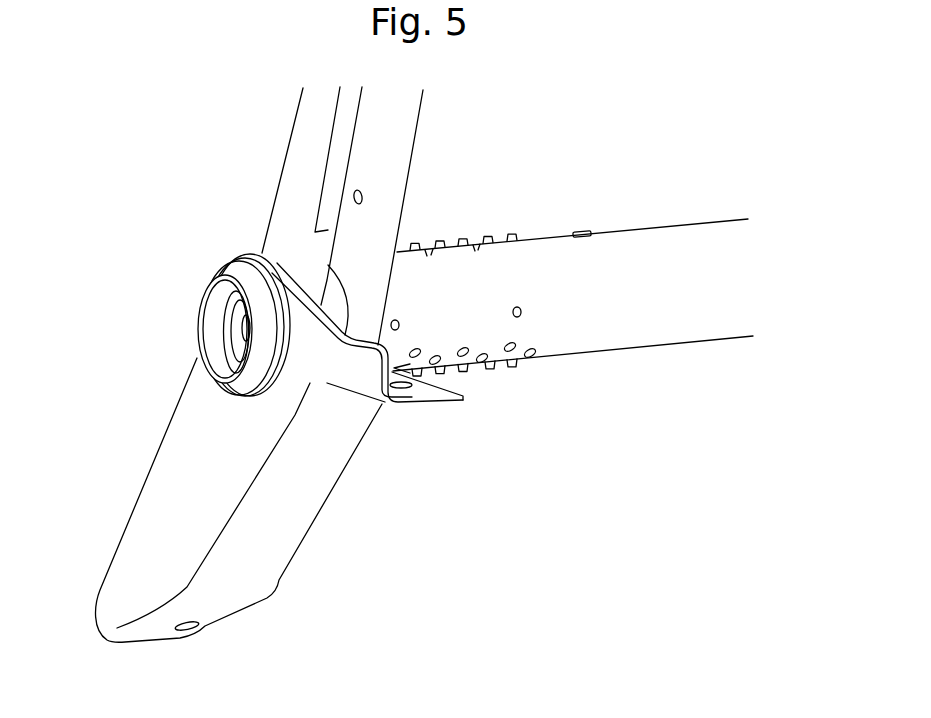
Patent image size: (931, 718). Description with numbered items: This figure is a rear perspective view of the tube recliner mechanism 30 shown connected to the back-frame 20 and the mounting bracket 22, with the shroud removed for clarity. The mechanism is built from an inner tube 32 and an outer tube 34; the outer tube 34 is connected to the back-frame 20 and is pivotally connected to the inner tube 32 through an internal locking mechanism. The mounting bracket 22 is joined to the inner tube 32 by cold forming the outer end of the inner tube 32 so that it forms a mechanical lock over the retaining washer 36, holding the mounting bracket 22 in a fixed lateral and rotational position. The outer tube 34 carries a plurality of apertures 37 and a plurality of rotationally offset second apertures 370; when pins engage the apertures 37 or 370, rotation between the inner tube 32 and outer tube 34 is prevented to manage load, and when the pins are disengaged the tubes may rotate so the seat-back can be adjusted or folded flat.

The back-frame 20 is at (295, 177).
The mounting bracket 22 is at (278, 545).
The tube recliner mechanism 30 is at (537, 208).
The inner tube 32 is at (200, 312).
The outer tube 34 is at (688, 328).
The retaining washer 36 is at (228, 275).
The apertures 37 is at (505, 347).
The second apertures 370 is at (480, 363).